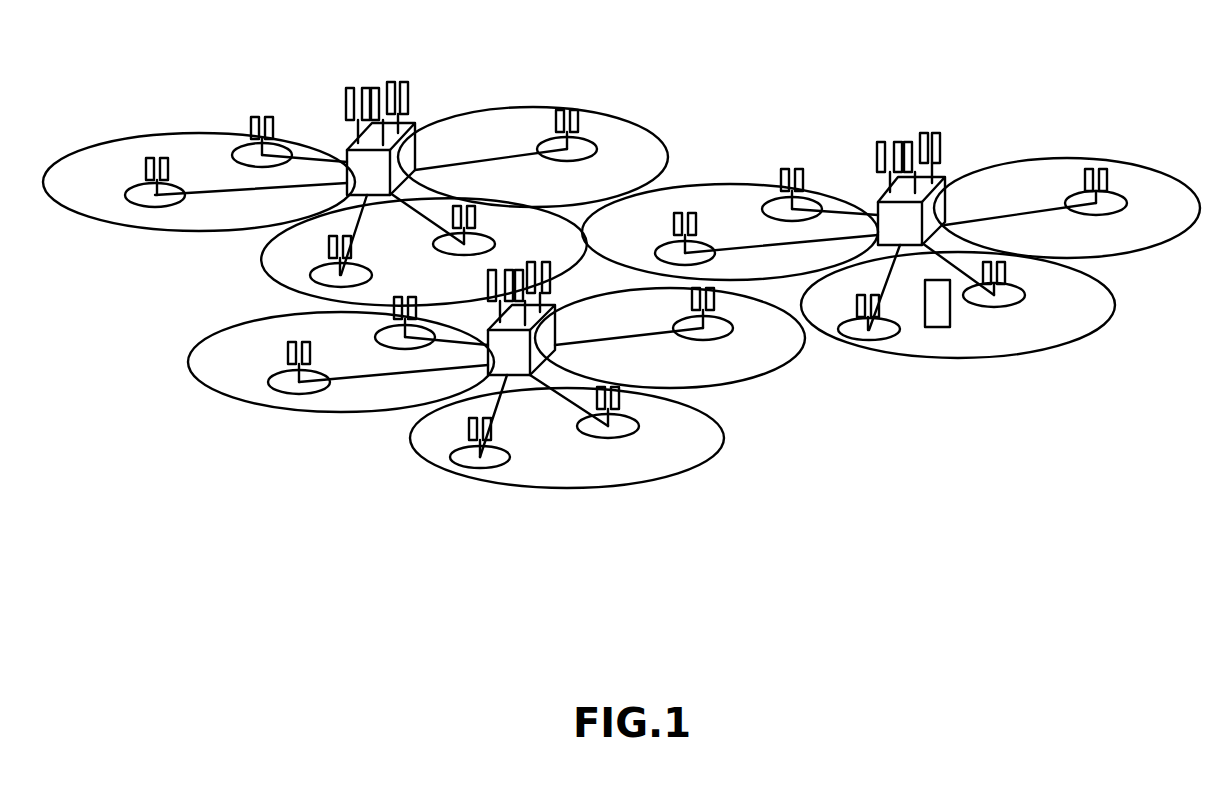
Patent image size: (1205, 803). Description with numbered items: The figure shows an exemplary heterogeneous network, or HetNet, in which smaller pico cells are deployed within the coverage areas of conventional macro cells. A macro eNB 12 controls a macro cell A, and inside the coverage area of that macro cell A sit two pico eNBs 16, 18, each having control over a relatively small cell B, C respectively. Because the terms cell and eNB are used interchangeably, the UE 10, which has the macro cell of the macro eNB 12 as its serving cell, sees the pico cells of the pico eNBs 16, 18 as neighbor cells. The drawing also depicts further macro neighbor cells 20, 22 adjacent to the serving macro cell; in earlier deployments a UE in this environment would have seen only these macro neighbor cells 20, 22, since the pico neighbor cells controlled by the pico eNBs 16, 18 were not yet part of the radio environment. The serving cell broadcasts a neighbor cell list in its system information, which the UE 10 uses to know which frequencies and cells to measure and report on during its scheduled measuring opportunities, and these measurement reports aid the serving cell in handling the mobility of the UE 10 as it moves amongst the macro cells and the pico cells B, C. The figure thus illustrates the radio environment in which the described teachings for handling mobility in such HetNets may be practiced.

The UE 10 is at (935, 327).
The macro eNB 12 is at (891, 257).
The pico eNB 16 is at (866, 328).
The pico eNB 18 is at (1003, 297).
The macro neighbor cell 20 is at (500, 358).
The macro neighbor cell 22 is at (408, 158).
The macro cell A is at (995, 347).
The pico cell B is at (887, 341).
The pico cell C is at (1024, 292).